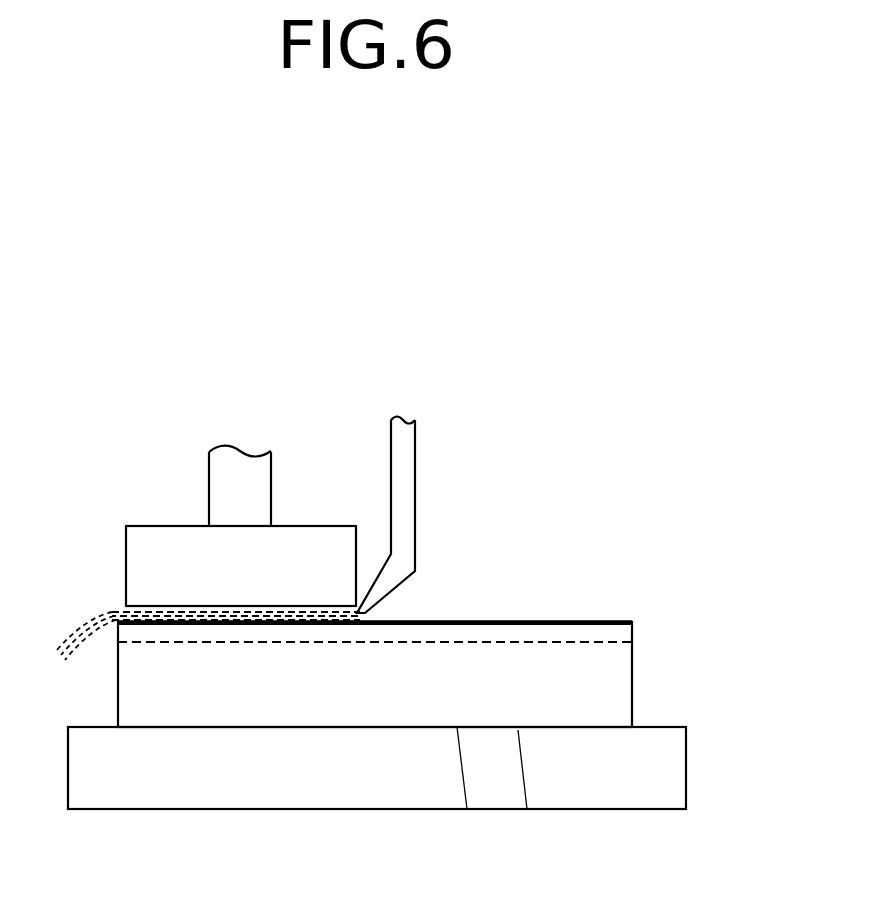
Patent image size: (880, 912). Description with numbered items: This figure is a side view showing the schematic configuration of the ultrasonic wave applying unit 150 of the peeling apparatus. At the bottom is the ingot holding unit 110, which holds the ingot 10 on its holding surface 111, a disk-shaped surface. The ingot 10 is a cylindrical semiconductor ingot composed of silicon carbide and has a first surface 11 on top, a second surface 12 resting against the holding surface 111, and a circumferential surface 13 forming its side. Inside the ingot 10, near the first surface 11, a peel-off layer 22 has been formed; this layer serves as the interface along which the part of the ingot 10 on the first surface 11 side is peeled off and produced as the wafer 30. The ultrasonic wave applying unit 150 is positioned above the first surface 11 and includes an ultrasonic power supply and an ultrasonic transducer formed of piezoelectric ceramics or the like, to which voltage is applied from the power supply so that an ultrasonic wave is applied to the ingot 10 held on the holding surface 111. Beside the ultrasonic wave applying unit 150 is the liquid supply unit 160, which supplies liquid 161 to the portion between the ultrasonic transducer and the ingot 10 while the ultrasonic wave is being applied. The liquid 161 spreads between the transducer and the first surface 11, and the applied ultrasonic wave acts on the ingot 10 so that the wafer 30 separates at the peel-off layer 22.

The ingot 10 is at (638, 608).
The first surface 11 is at (563, 622).
The second surface 12 is at (518, 730).
The circumferential surface 13 is at (457, 710).
The peel-off layer 22 is at (600, 643).
The wafer 30 is at (479, 632).
The ingot holding unit 110 is at (672, 767).
The holding surface 111 is at (663, 728).
The ultrasonic wave applying unit 150 is at (167, 538).
The liquid supply unit 160 is at (419, 491).
The liquid 161 is at (103, 613).